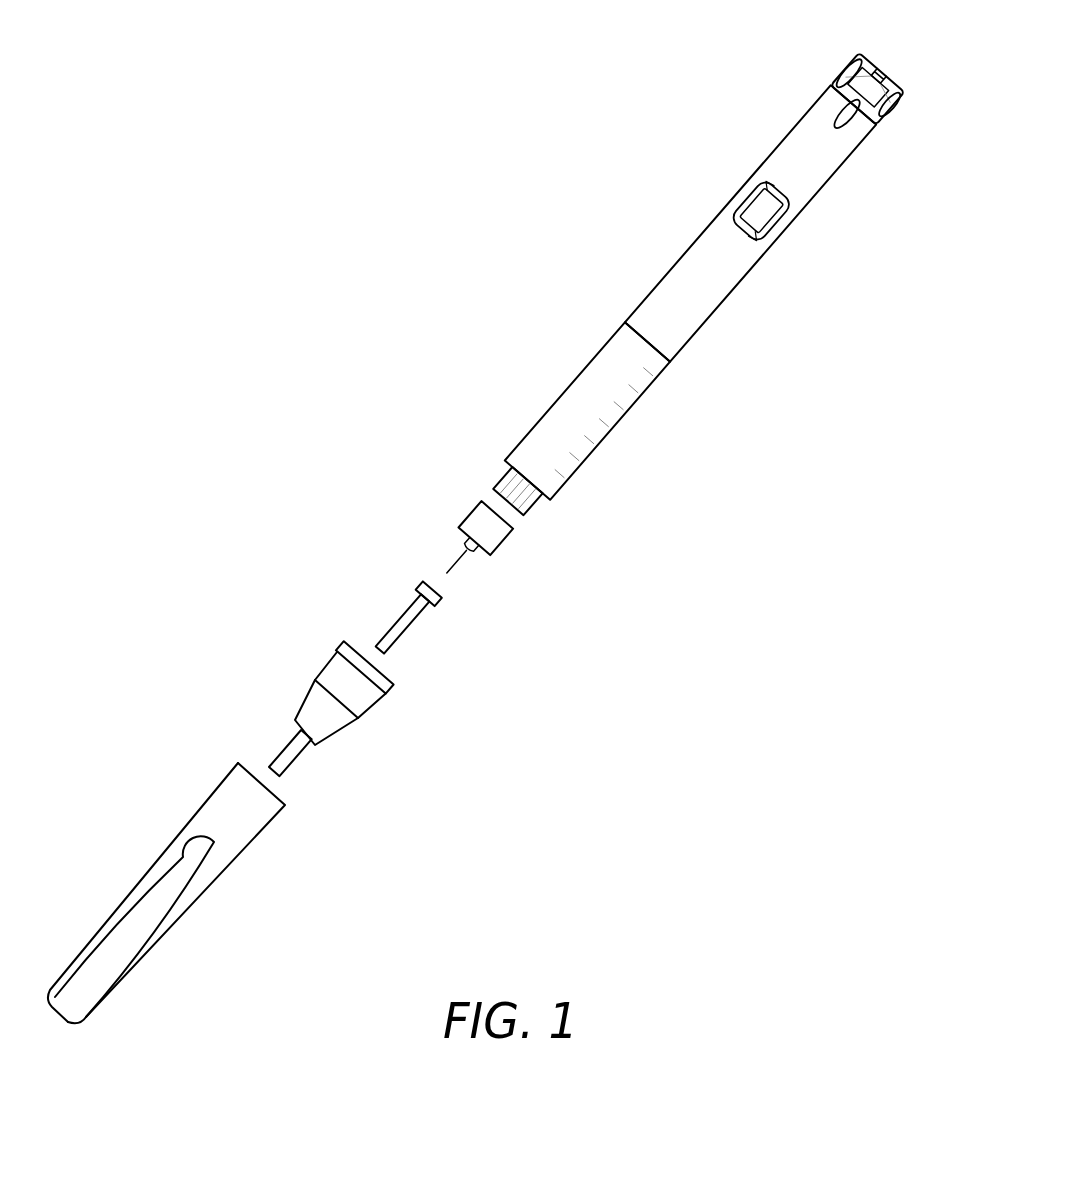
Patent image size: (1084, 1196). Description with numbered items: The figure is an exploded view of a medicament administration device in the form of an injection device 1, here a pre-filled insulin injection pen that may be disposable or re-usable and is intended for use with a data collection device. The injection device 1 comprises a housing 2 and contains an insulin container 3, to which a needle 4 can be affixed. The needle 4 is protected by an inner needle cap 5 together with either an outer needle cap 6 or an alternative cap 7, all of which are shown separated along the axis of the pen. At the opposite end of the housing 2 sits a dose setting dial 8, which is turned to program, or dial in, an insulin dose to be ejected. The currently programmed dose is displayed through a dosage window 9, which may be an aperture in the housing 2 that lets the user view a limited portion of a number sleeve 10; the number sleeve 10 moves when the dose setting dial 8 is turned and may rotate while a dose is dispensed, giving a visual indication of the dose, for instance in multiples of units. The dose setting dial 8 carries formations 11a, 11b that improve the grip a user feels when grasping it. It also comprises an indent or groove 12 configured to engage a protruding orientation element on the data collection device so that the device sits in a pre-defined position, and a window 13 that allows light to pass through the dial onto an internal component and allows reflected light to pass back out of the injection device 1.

The injection device 1 is at (544, 270).
The housing 2 is at (685, 263).
The insulin container 3 is at (573, 398).
The needle 4 is at (473, 516).
The inner needle cap 5 is at (400, 618).
The outer needle cap 6 is at (333, 670).
The alternative cap 7 is at (215, 800).
The dose setting dial 8 is at (806, 63).
The dosage window 9 is at (772, 185).
The number sleeve 10 is at (777, 208).
The formation 11a is at (884, 118).
The formation 11b is at (838, 80).
The groove 12 is at (879, 72).
The window 13 is at (853, 112).